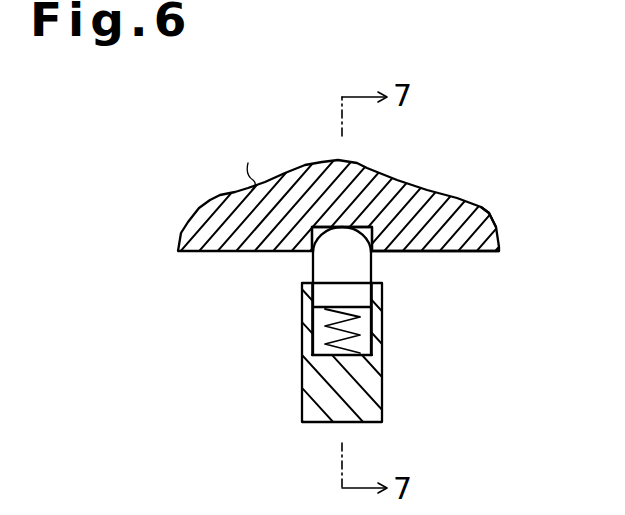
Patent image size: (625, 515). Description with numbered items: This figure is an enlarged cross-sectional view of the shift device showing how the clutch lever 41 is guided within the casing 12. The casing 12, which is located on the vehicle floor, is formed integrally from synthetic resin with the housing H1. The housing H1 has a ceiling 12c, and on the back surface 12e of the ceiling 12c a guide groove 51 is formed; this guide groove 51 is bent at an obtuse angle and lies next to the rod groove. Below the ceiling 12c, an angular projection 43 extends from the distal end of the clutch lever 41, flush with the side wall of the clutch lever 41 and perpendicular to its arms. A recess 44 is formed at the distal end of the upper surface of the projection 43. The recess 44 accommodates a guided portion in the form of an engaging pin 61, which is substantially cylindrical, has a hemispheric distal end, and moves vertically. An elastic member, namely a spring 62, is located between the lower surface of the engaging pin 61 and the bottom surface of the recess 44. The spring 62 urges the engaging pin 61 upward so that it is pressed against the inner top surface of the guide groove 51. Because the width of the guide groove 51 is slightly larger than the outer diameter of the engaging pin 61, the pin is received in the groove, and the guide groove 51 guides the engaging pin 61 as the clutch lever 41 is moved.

The housing H1 is at (250, 160).
The casing 12 is at (440, 192).
The ceiling 12c is at (491, 218).
The back surface 12e is at (478, 255).
The guide groove 51 is at (387, 251).
The engaging pin 61 is at (313, 263).
The spring 62 is at (372, 331).
The clutch lever 41 is at (302, 382).
The projection 43 is at (378, 389).
The recess 44 is at (302, 339).